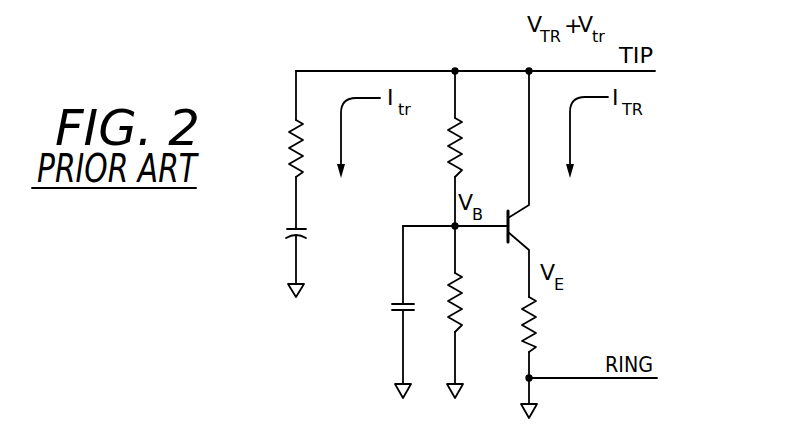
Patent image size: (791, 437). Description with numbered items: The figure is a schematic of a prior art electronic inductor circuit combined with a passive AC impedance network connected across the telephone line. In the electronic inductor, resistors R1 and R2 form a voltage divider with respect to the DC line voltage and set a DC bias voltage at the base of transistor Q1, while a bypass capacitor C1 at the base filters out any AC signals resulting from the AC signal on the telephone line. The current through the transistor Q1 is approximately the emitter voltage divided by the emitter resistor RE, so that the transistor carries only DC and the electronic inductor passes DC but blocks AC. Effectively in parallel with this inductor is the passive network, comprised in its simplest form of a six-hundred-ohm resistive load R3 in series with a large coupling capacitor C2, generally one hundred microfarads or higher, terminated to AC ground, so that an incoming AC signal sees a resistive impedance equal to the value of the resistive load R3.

The resistive load R3 is at (285, 150).
The coupling capacitor C2 is at (280, 258).
The resistor R1 is at (473, 148).
The resistor R2 is at (472, 312).
The bypass capacitor C1 is at (390, 312).
The transistor Q1 is at (537, 184).
The emitter resistor RE is at (546, 357).